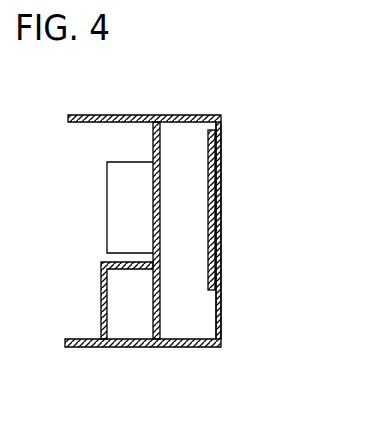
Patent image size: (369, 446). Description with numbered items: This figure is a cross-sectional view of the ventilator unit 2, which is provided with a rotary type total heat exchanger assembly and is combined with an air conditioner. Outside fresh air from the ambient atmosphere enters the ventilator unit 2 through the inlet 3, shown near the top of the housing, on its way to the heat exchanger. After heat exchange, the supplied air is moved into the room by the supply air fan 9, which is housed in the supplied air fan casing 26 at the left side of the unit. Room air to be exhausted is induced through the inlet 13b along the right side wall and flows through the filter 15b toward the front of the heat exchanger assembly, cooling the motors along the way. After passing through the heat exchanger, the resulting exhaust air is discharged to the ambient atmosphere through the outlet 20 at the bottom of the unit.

The ventilator unit 2 is at (95, 115).
The inlet 3 is at (130, 177).
The outlet 20 is at (122, 328).
The inlet 13b is at (222, 170).
The filter 15b is at (215, 221).
The supplied air fan casing 26 is at (11, 201).
The supply air fan 9 is at (13, 276).